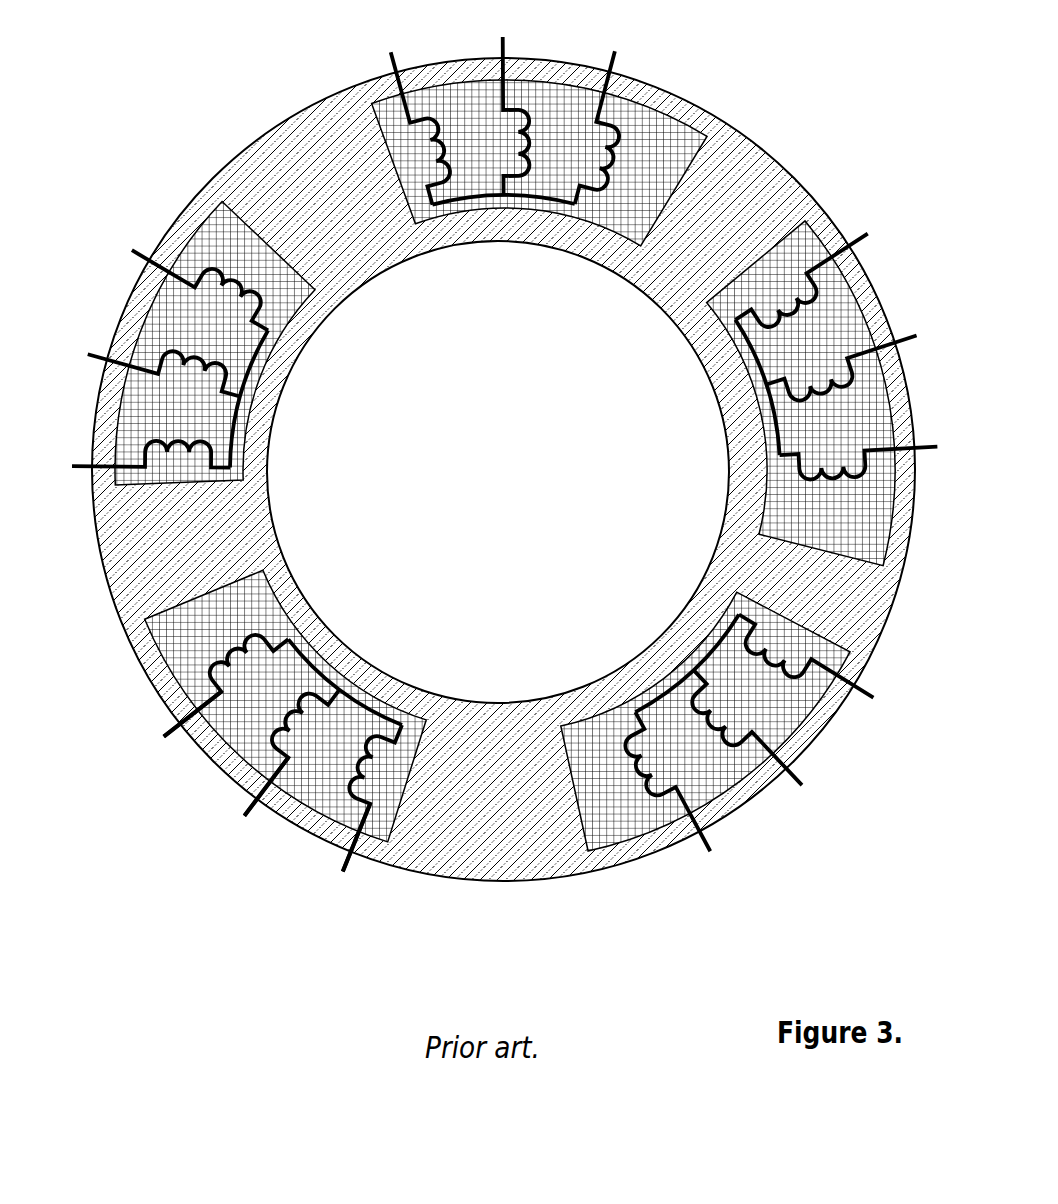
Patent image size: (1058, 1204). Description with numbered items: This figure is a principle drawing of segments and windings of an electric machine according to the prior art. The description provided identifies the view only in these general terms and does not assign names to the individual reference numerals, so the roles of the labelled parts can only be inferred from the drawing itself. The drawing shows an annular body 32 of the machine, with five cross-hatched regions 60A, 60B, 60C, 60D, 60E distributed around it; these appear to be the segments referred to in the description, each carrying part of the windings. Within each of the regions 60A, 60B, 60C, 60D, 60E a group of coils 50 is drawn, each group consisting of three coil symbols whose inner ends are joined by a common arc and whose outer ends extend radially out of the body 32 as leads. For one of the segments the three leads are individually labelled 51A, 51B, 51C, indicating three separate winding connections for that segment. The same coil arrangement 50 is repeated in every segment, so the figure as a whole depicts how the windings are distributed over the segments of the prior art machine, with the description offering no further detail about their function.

The stator core 32 is at (260, 178).
The winding coil 50 is at (265, 374).
The coil lead 51A is at (165, 730).
The coil lead 51B is at (247, 807).
The coil lead 51C is at (341, 862).
The stator slot 60A is at (397, 822).
The stator slot 60B is at (801, 700).
The stator slot 60C is at (122, 414).
The stator slot 60D is at (827, 213).
The stator slot 60E is at (640, 122).